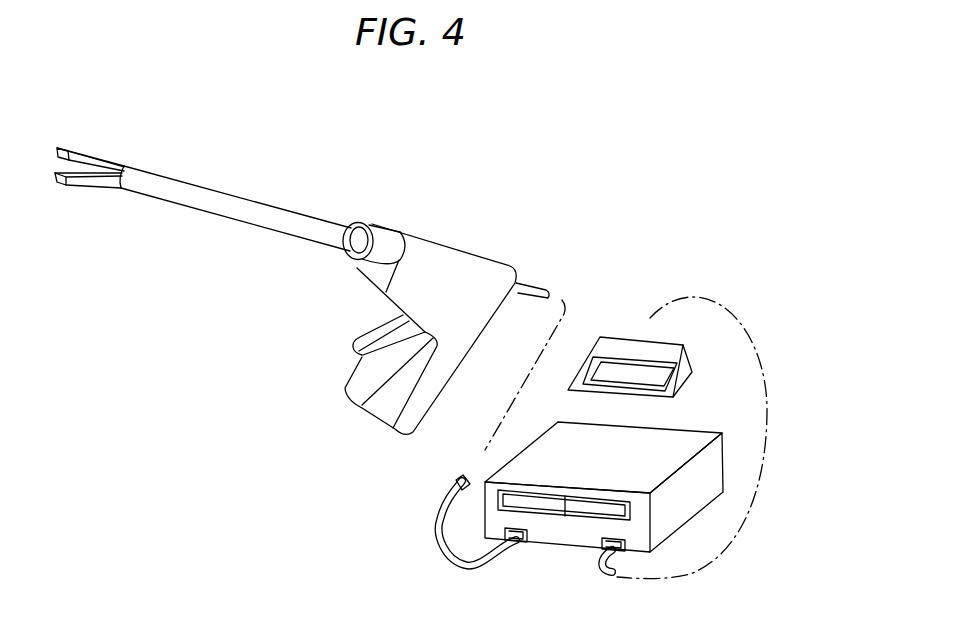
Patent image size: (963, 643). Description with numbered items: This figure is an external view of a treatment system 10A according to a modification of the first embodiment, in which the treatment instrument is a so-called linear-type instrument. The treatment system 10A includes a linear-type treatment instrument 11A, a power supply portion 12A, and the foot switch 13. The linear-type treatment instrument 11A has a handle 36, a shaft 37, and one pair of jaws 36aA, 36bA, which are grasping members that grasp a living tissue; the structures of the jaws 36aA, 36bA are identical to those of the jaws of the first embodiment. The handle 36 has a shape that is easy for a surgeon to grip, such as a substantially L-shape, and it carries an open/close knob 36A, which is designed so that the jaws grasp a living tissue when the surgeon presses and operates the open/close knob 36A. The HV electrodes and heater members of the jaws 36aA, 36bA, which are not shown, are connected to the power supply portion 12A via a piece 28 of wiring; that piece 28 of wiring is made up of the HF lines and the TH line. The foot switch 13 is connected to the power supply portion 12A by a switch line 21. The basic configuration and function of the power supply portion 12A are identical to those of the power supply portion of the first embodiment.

The treatment system 10A is at (733, 192).
The linear-type treatment instrument 11A is at (322, 193).
The power supply portion 12A is at (690, 428).
The foot switch 13 is at (621, 339).
The switch line 21 is at (770, 390).
The piece of wiring 28 is at (483, 450).
The handle 36 is at (463, 252).
The open/close knob 36A is at (358, 336).
The jaw 36aA is at (97, 153).
The jaw 36bA is at (75, 190).
The shaft 37 is at (252, 197).